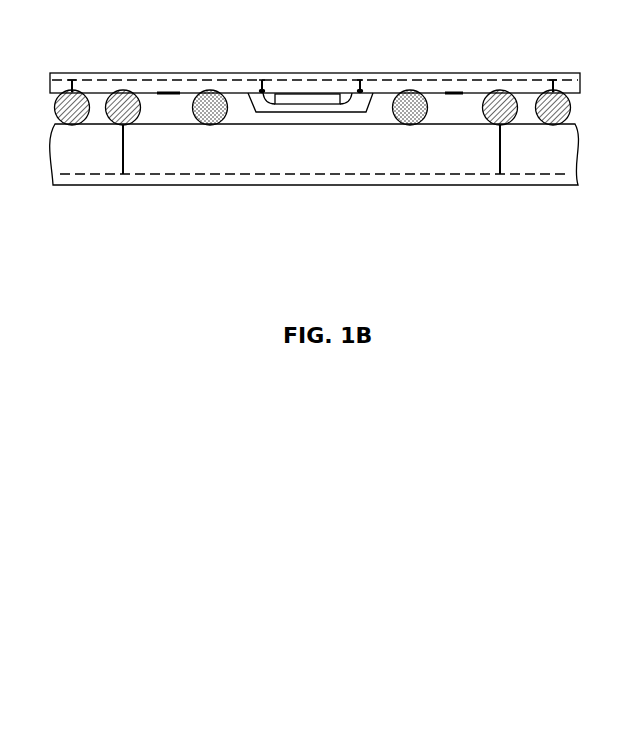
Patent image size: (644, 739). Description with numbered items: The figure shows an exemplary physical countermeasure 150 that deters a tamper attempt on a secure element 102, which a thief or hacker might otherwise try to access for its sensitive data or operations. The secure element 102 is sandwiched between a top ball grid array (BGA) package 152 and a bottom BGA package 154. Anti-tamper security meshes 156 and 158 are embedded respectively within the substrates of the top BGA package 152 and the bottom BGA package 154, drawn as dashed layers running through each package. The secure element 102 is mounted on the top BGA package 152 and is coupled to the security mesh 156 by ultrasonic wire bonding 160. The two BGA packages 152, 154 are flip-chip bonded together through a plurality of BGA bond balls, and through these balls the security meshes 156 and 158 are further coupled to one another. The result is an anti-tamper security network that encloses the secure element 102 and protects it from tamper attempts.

The physical countermeasure 150 is at (313, 174).
The top ball grid array (BGA) package 152 is at (581, 89).
The bottom BGA package 154 is at (579, 151).
The anti-tamper security mesh 156 is at (413, 78).
The anti-tamper security mesh 158 is at (424, 176).
The ultrasonic wire bonding 160 is at (274, 97).
The secure element 102 is at (322, 101).